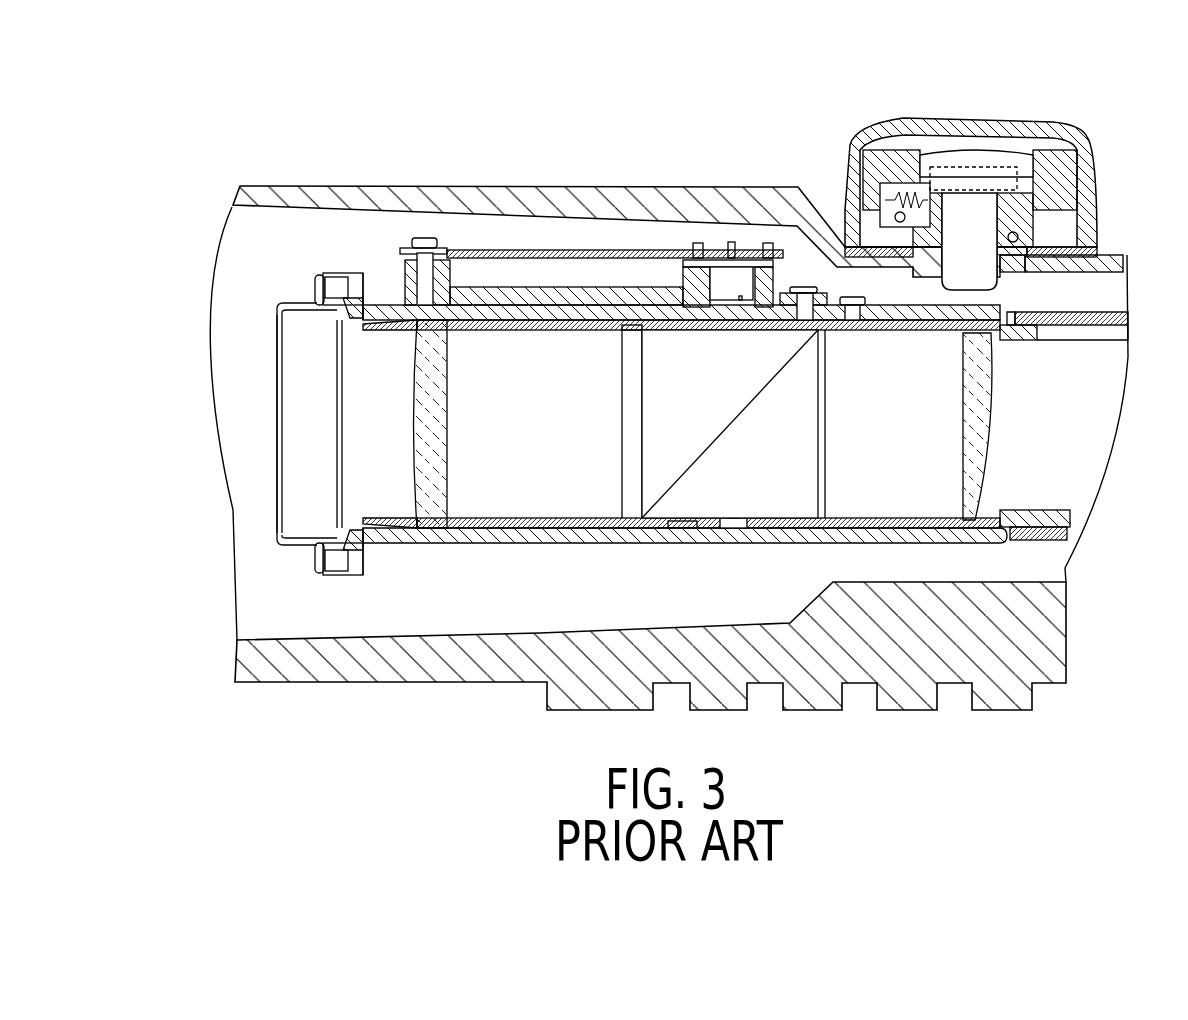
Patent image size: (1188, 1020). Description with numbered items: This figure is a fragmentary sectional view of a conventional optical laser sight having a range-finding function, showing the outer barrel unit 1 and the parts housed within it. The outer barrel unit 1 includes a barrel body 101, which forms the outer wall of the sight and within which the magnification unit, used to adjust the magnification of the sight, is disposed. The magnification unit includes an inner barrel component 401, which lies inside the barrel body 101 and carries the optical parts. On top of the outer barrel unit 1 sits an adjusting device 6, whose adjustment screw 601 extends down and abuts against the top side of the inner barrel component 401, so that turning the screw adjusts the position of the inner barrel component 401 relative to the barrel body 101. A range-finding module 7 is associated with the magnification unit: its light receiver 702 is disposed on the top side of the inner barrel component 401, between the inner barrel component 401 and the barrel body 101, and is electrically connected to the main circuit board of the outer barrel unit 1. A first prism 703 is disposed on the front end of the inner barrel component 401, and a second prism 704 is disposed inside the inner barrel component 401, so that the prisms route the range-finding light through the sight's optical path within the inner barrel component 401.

The outer barrel unit 1 is at (518, 186).
The barrel body 101 is at (432, 186).
The range-finding module 7 is at (612, 246).
The light receiver 702 is at (737, 282).
The first prism 703 is at (300, 428).
The second prism 704 is at (773, 490).
The inner barrel component 401 is at (950, 530).
The adjusting device 6 is at (1066, 116).
The adjustment screw 601 is at (967, 273).